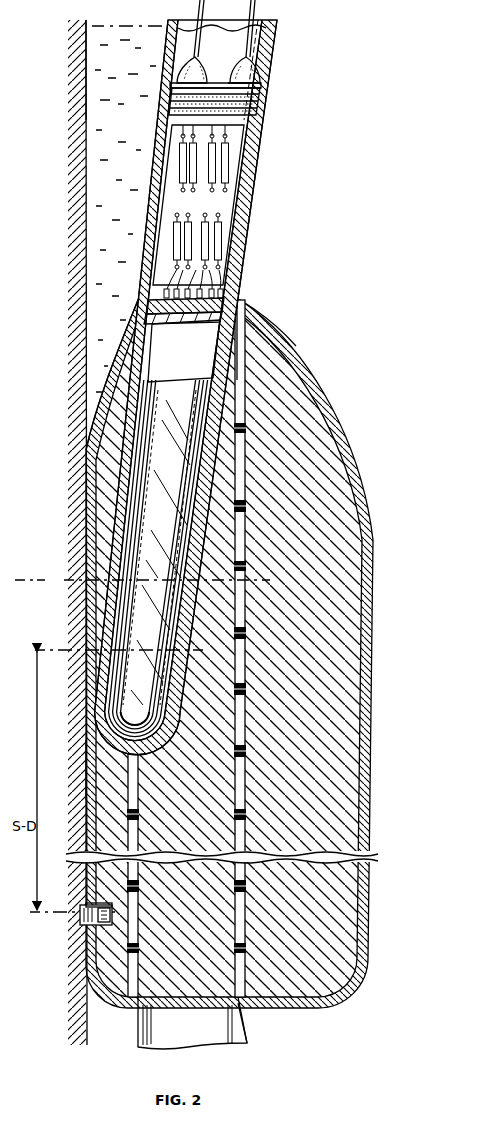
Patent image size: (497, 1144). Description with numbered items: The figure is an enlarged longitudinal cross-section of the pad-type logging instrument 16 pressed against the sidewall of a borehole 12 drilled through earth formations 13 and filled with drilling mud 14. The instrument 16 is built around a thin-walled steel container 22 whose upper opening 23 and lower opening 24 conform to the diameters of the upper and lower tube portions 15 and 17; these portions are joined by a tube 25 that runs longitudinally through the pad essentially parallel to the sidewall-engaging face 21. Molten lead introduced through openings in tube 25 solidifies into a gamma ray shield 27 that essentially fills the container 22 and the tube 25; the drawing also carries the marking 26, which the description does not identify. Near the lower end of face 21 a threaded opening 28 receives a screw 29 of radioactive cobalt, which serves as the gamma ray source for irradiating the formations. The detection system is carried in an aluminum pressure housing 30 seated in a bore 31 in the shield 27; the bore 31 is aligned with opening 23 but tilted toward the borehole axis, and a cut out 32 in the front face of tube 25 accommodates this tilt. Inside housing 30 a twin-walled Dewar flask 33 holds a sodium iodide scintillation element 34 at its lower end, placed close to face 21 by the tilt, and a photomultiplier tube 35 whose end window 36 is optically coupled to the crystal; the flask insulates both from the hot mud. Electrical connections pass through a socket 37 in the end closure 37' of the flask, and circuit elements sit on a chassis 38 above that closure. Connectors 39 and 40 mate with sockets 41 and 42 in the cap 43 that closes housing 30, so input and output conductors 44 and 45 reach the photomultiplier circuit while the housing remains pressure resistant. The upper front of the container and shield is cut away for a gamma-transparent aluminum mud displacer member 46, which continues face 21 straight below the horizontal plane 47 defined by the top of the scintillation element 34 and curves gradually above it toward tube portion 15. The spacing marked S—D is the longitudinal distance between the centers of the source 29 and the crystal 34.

The borehole 12 is at (88, 80).
The earth formations 13 is at (58, 534).
The drilling mud 14 is at (128, 131).
The tube portion 15 is at (258, 120).
The instrument 16 is at (358, 446).
The tube portion 17 is at (137, 1023).
The sidewall-engaging face 21 is at (88, 757).
The container 22 is at (248, 654).
The upper opening 23 is at (252, 302).
The lower opening 24 is at (246, 1023).
The tube 25 is at (247, 748).
The pipe couplings 26 is at (240, 536).
The gamma ray shield 27 is at (300, 827).
The threaded opening 28 is at (84, 924).
The screw 29 is at (82, 908).
The pressure housing 30 is at (243, 250).
The bore 31 is at (142, 368).
The cut out 32 is at (127, 768).
The Dewar flask 33 is at (240, 340).
The scintillation element 34 is at (118, 712).
The photomultiplier tube 35 is at (168, 560).
The end window 36 is at (182, 641).
The socket 37 is at (157, 340).
The end closure 37' is at (159, 304).
The chassis 38 is at (228, 206).
The electrical connector 39 is at (183, 76).
The electrical connector 40 is at (254, 72).
The socket 41 is at (180, 82).
The socket 42 is at (261, 84).
The cap 43 is at (260, 96).
The electrical input conductor 44 is at (200, 22).
The electrical output conductor 45 is at (249, 26).
The mud displacer member 46 is at (97, 449).
The horizontal plane 47 is at (142, 580).